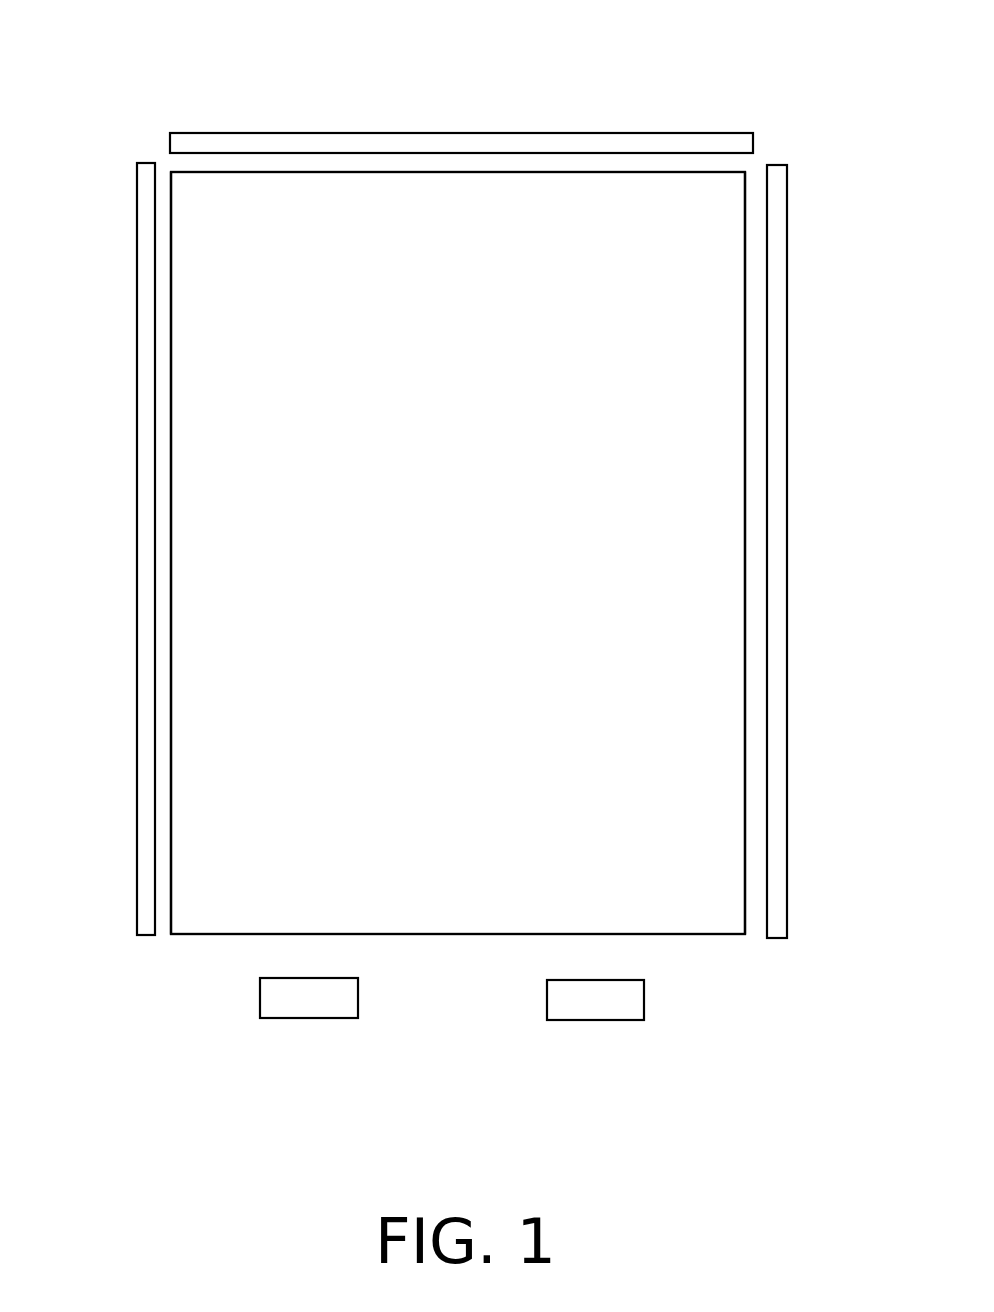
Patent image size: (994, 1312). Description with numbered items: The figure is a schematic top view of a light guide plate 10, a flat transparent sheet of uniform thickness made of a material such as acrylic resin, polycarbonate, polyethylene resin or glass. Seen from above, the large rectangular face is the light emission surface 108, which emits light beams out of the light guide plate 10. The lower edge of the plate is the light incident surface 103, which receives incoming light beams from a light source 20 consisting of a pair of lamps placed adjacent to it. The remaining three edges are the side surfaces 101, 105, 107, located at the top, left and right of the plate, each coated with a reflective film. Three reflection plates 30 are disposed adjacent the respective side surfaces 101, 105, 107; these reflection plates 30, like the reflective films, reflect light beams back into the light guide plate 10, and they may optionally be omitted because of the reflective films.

The light guide plate 10 is at (752, 166).
The side surface 101 is at (182, 168).
The light incident surface 103 is at (170, 935).
The side surface 105 is at (170, 340).
The side surface 107 is at (745, 250).
The light emission surface 108 is at (348, 237).
The reflection plates 30 is at (536, 145).
The light source 20 is at (282, 1010).